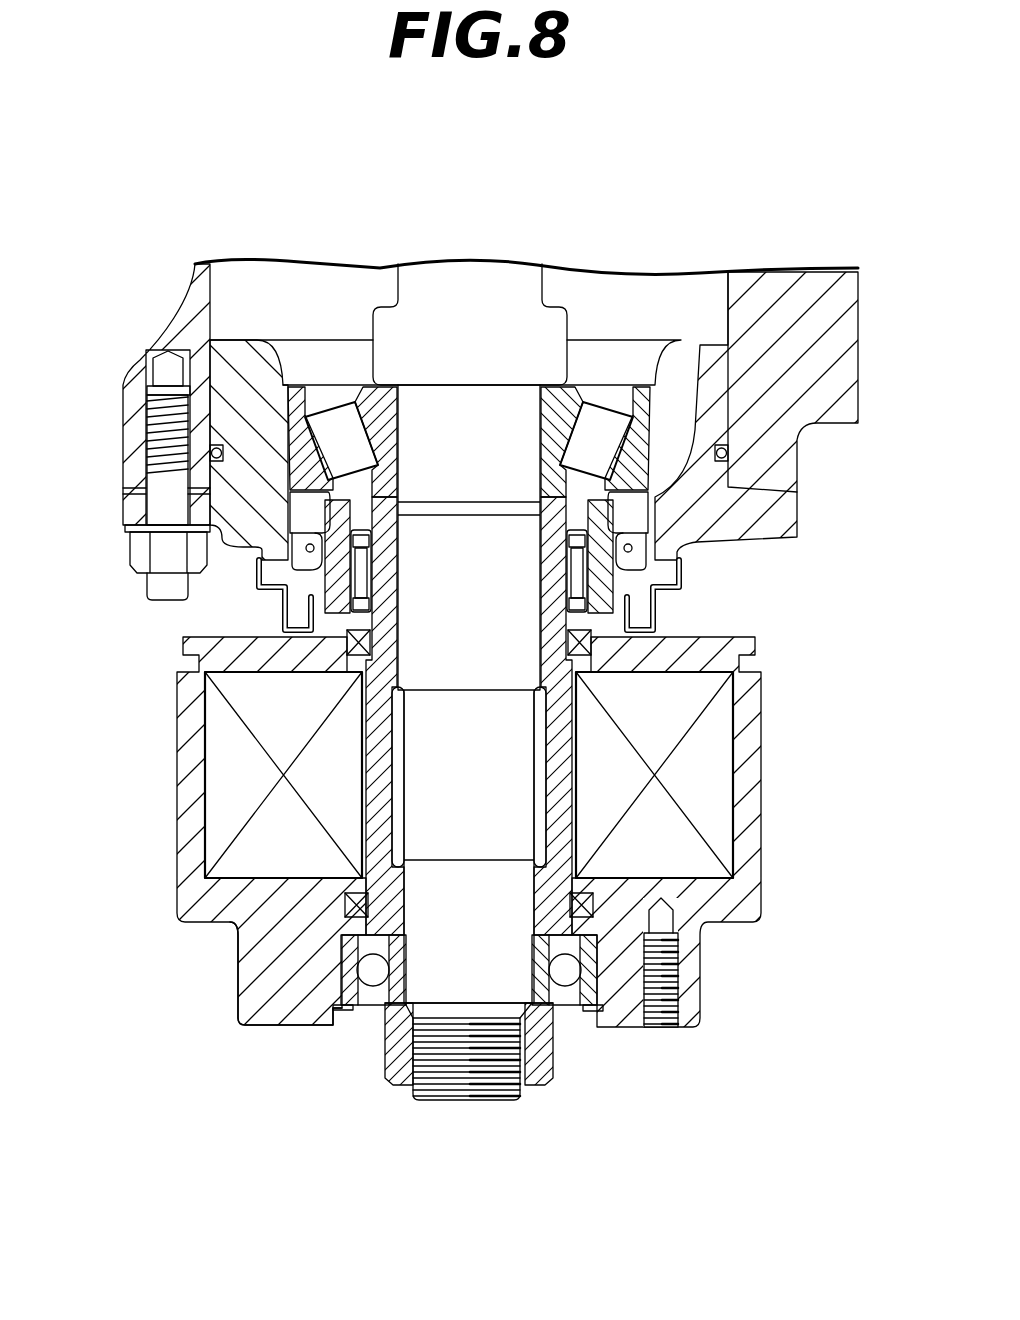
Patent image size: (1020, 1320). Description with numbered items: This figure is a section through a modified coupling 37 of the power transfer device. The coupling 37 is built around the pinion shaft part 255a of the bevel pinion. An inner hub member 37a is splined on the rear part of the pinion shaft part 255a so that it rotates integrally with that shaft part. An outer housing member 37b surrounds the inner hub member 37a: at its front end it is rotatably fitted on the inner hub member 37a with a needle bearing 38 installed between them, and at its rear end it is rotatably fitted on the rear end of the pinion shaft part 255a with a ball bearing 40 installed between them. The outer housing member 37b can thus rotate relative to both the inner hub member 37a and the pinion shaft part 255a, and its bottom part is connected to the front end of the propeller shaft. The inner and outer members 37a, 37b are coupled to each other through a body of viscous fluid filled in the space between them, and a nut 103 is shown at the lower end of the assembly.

The coupling 37 is at (798, 709).
The inner hub member 37a is at (365, 730).
The outer housing member 37b is at (238, 960).
The needle bearing 38 is at (360, 572).
The pinion shaft part 255a is at (512, 793).
The ball bearing 40 is at (398, 968).
The nut 103 is at (398, 1073).